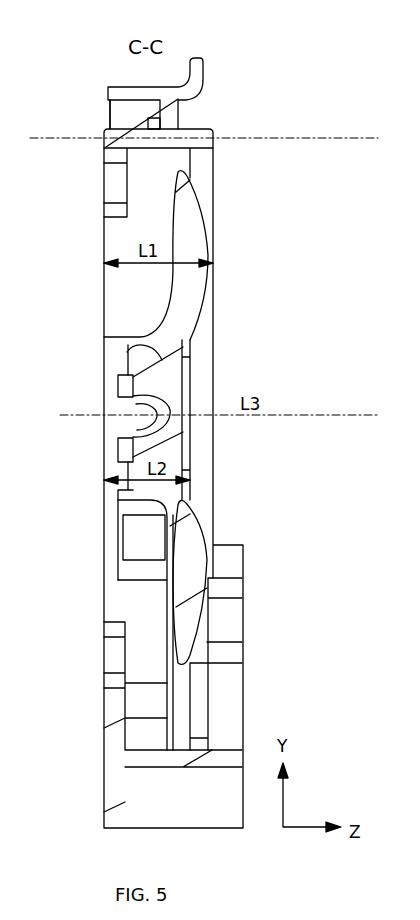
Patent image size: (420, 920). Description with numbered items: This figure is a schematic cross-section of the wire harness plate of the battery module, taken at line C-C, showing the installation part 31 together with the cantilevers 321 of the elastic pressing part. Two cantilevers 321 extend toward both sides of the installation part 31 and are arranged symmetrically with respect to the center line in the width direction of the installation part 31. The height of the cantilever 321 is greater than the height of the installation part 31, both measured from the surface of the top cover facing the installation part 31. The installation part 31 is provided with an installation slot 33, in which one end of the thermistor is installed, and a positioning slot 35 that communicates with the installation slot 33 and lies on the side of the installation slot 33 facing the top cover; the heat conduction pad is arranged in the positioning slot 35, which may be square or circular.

The cantilever 321 is at (197, 240).
The positioning slot 35 is at (126, 347).
The installation part 31 is at (150, 355).
The installation slot 33 is at (150, 416).